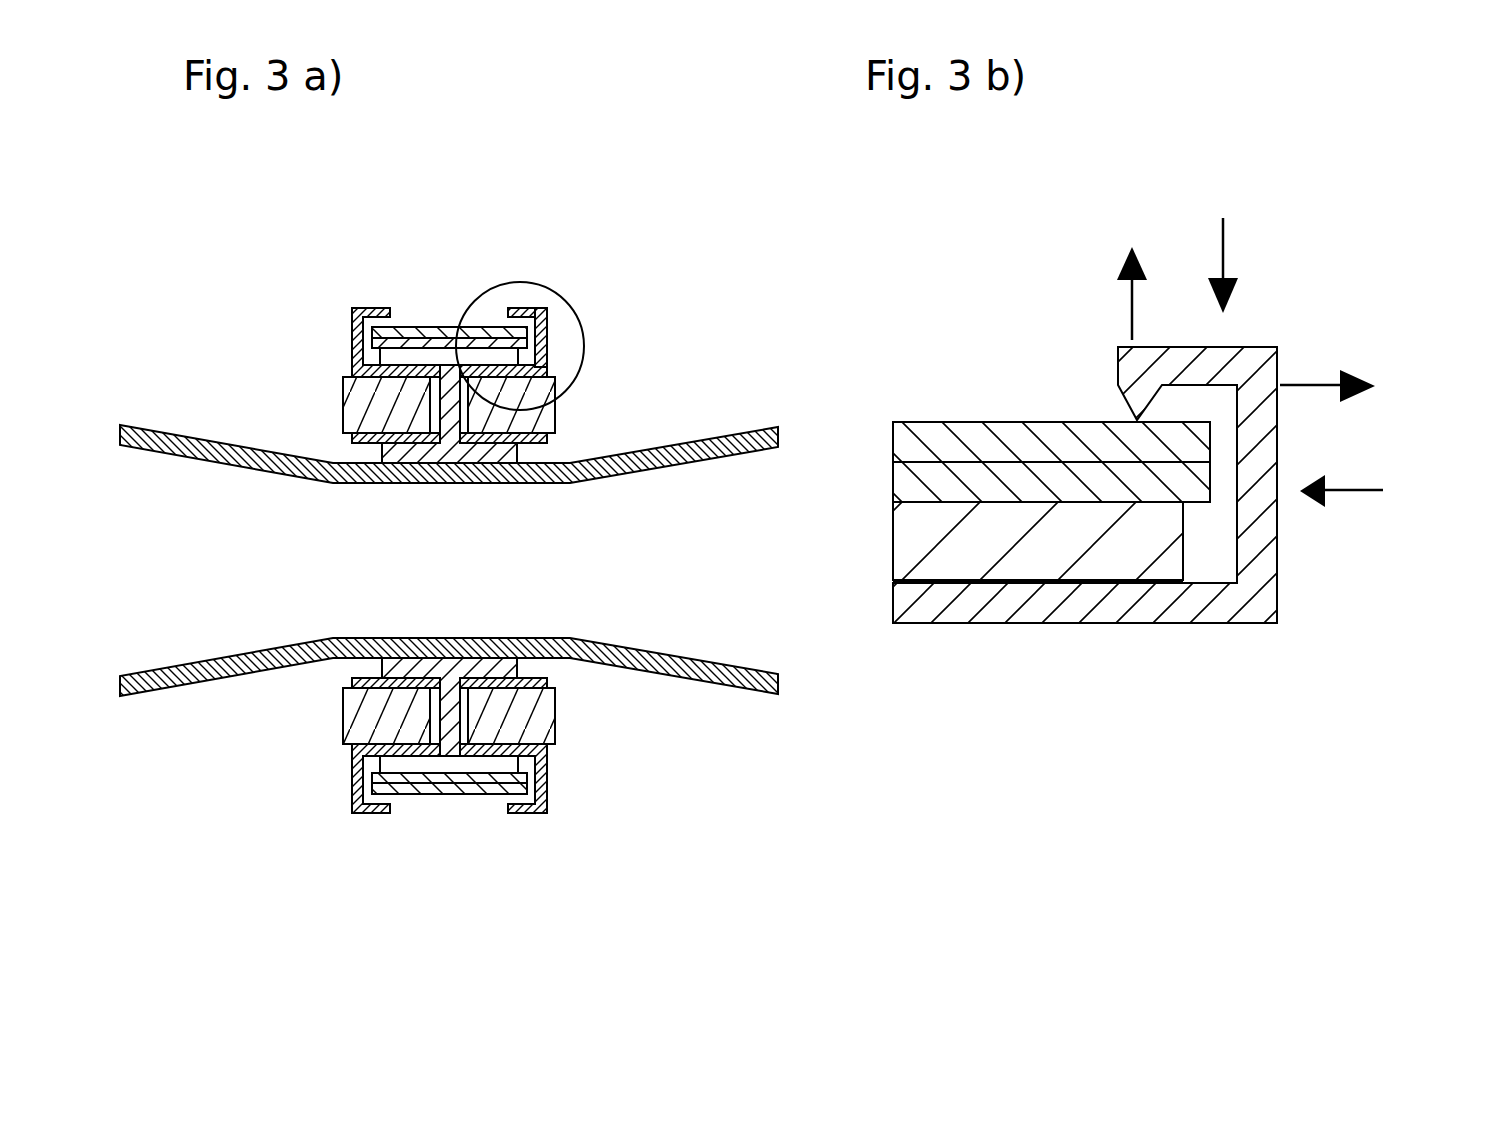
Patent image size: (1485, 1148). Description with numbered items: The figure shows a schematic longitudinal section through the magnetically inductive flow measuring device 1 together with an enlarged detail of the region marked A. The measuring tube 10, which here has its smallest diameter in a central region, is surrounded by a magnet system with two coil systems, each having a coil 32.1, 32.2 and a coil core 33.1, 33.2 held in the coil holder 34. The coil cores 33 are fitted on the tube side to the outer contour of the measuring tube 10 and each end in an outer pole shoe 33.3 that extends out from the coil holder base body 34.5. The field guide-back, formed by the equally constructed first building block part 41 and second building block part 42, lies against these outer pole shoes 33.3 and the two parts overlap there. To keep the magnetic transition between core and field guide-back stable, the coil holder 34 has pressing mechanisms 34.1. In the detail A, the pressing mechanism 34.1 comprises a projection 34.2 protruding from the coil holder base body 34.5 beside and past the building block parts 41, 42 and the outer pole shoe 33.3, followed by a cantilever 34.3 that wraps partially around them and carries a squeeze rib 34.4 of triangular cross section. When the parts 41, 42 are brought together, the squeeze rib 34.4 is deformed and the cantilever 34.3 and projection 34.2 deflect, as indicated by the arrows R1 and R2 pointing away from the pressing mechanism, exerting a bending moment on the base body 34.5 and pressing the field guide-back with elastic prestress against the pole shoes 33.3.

In FIG. 3a, the magnetically inductive flow measuring device 1 is at (525, 563).
In FIG. 3a, the measuring tube 10 is at (778, 697).
In FIG. 3a, the first coil 32.1 is at (343, 403).
In FIG. 3a, the second coil 32.2 is at (367, 727).
In FIG. 3b, the coil cores 33 is at (917, 583).
In FIG. 3a, the first coil core 33.1 is at (405, 448).
In FIG. 3a, the second coil core 33.2 is at (453, 663).
In FIG. 3a, the outer pole shoe 33.3 is at (515, 347).
In FIG. 3b, the outer pole shoe 33.3 is at (937, 558).
In FIG. 3a, the coil holder 34 is at (363, 363).
In FIG. 3a, the pressing mechanism 34.1 is at (553, 343).
In FIG. 3b, the pressing mechanism 34.1 is at (1288, 608).
In FIG. 3b, the projection 34.2 is at (1263, 543).
In FIG. 3b, the cantilever 34.3 is at (1197, 360).
In FIG. 3b, the squeeze rib 34.4 is at (1143, 400).
In FIG. 3b, the coil holder base body 34.5 is at (1078, 597).
In FIG. 3a, the first building block part 41 is at (385, 340).
In FIG. 3b, the first building block part 41 is at (920, 492).
In FIG. 3a, the second building block part 42 is at (426, 331).
In FIG. 3b, the second building block part 42 is at (920, 437).
In FIG. 3a, the detail A is at (945, 332).
In FIG. 3b, the direction R1 is at (1246, 284).
In FIG. 3b, the direction R2 is at (1375, 493).